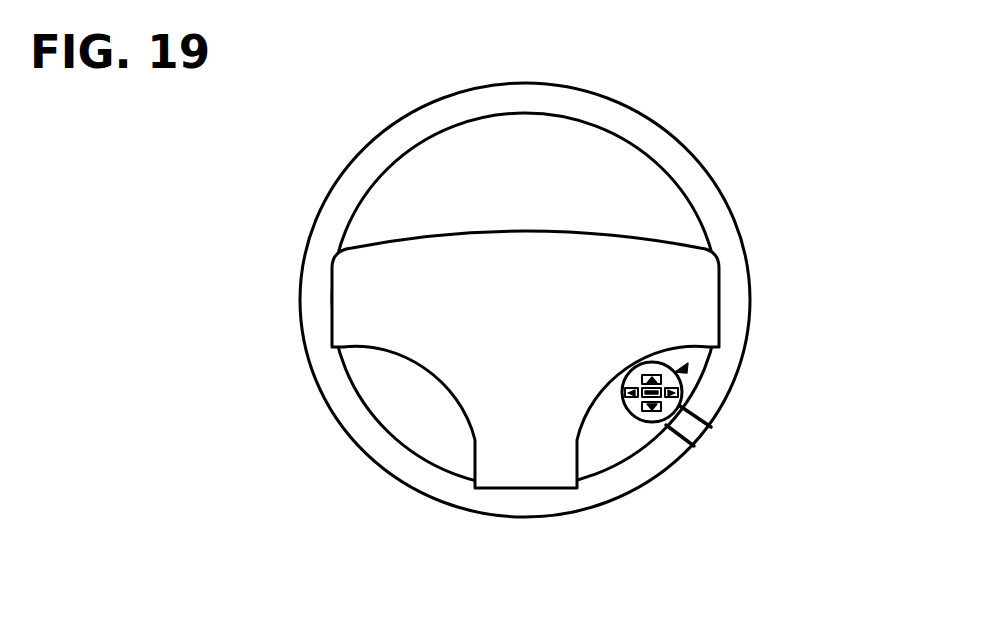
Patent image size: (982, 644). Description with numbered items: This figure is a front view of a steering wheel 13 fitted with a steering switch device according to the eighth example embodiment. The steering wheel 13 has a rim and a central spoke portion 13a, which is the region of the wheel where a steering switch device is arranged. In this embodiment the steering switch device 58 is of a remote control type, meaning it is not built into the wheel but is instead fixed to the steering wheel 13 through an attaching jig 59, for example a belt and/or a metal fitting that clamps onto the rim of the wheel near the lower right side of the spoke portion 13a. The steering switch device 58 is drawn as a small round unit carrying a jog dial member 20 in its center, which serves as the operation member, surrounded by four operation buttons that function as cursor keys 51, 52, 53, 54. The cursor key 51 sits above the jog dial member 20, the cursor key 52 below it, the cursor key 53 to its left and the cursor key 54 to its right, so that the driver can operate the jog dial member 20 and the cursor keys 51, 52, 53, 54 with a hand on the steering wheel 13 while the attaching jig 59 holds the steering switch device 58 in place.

The steering wheel 13 is at (652, 119).
The spoke portion 13a is at (633, 233).
The jog dial member 20 is at (725, 440).
The cursor key 51 is at (656, 373).
The cursor key 52 is at (655, 413).
The cursor key 53 is at (626, 395).
The cursor key 54 is at (680, 392).
The steering switch device 58 is at (680, 371).
The attaching jig 59 is at (688, 428).